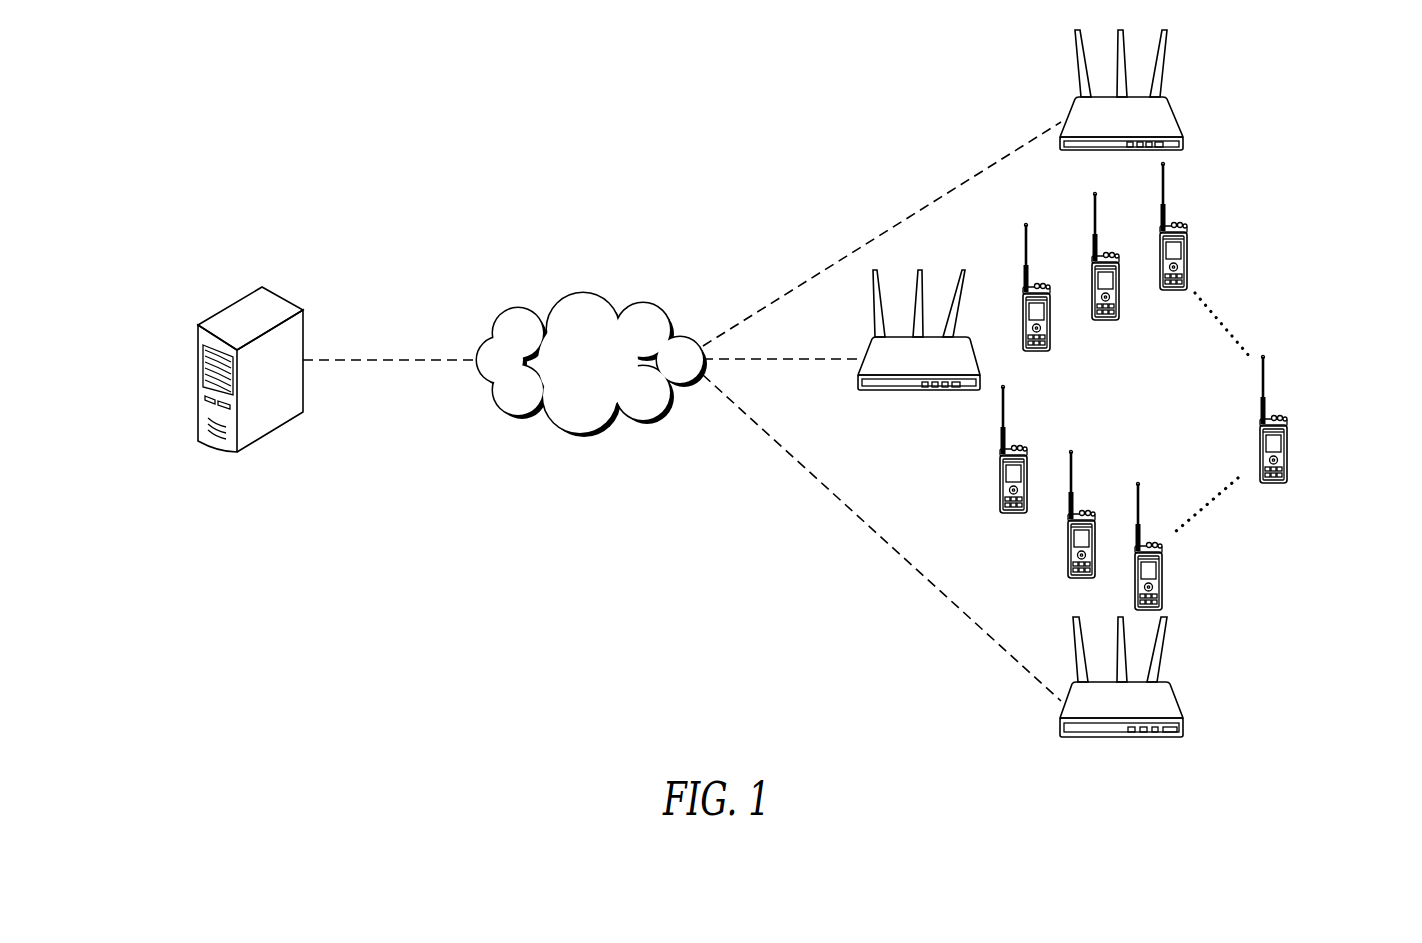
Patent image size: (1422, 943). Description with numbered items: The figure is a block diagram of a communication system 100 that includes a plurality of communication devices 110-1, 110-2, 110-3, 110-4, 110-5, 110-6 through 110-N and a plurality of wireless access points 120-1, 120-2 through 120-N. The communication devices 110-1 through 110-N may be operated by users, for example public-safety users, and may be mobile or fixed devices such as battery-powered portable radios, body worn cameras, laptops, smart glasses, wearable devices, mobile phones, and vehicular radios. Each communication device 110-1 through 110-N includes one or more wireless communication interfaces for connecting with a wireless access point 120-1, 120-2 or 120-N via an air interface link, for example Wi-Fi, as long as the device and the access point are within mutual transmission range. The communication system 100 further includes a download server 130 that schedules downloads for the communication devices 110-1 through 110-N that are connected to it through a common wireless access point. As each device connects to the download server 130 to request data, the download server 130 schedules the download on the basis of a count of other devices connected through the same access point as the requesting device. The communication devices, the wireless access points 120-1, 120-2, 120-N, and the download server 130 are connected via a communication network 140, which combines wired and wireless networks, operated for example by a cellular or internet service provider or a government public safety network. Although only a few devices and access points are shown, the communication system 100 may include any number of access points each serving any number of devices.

The communication system 100 is at (282, 88).
The download server 130 is at (288, 292).
The communication network 140 is at (556, 296).
The wireless access point 120-1 is at (1078, 64).
The wireless access point 120-2 is at (875, 272).
The wireless access point 120-N is at (1063, 716).
The communication device 110-1 is at (1000, 466).
The communication device 110-2 is at (1068, 556).
The communication device 110-3 is at (1162, 573).
The communication device 110-4 is at (1035, 352).
The communication device 110-5 is at (1104, 320).
The communication device 110-6 is at (1187, 258).
The communication device 110-N is at (1287, 455).